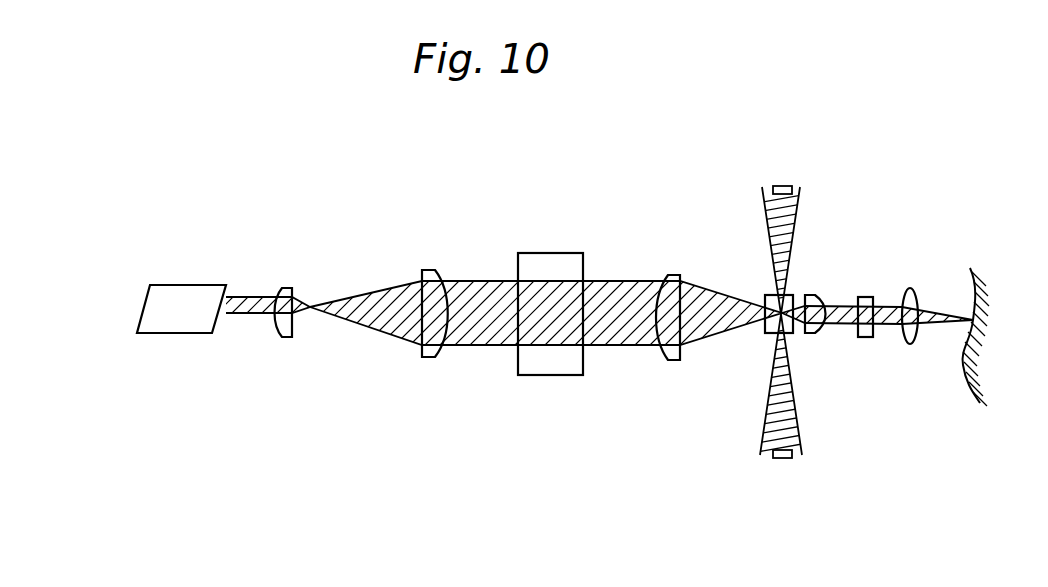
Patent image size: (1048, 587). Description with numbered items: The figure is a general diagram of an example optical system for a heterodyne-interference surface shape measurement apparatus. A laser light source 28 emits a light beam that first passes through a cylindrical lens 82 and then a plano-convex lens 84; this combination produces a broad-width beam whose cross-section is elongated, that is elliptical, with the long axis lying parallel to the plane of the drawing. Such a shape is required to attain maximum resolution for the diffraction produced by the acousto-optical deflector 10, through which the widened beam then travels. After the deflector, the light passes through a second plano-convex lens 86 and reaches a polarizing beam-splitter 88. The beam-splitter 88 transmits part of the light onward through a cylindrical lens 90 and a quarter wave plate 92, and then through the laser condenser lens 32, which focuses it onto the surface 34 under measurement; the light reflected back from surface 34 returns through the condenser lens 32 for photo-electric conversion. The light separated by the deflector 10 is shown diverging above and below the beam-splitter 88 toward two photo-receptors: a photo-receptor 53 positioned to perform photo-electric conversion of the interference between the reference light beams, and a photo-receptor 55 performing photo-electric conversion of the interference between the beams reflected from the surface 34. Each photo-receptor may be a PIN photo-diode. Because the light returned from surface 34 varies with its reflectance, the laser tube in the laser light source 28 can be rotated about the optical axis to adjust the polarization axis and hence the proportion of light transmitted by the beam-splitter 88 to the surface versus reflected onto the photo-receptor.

The acousto-optical deflector 10 is at (552, 375).
The laser light source 28 is at (177, 333).
The laser condenser lens 32 is at (911, 288).
The surface 34 is at (1003, 297).
The photo-receptor 53 is at (784, 187).
The photo-receptor 55 is at (785, 458).
The cylindrical lens 82 is at (284, 288).
The plano-convex lens 84 is at (435, 270).
The plano-convex lens 86 is at (670, 275).
The polarizing beam-splitter 88 is at (763, 337).
The cylindrical lens 90 is at (812, 295).
The quarter wave plate 92 is at (866, 297).